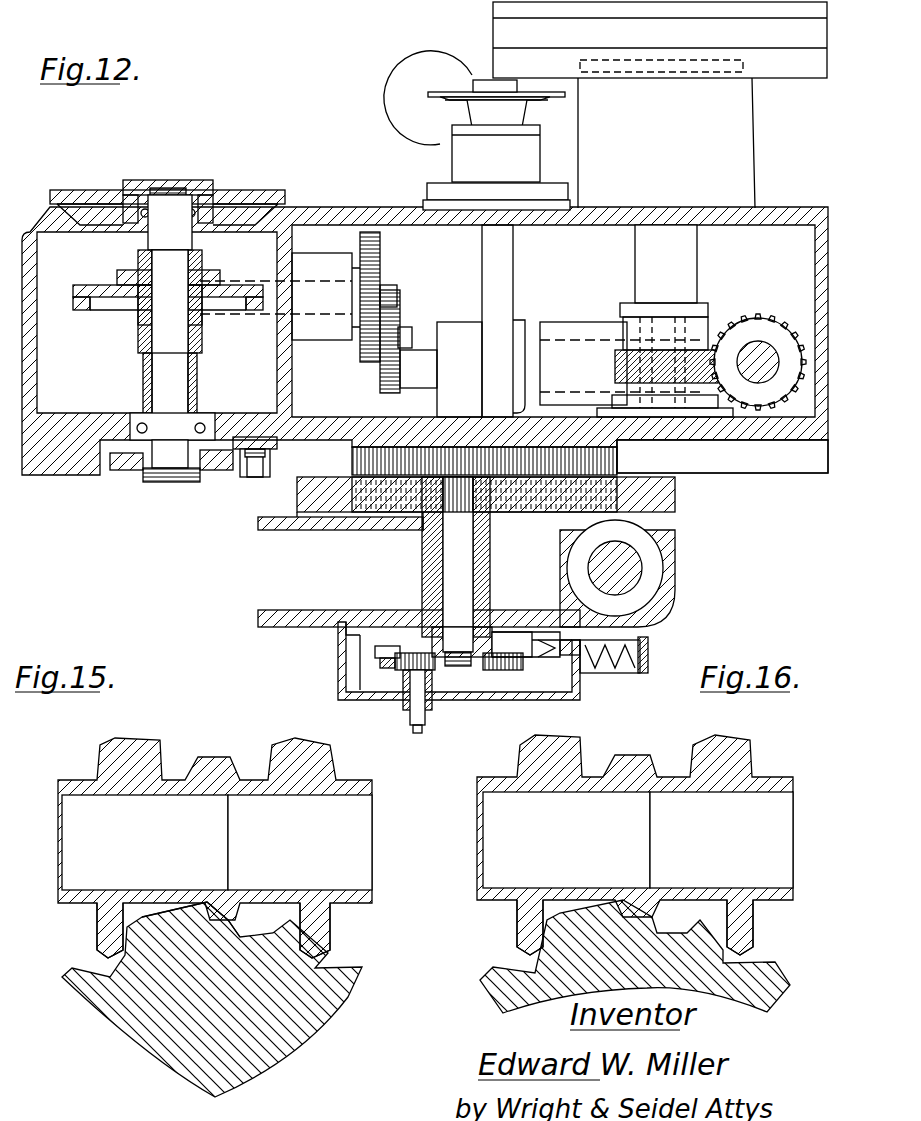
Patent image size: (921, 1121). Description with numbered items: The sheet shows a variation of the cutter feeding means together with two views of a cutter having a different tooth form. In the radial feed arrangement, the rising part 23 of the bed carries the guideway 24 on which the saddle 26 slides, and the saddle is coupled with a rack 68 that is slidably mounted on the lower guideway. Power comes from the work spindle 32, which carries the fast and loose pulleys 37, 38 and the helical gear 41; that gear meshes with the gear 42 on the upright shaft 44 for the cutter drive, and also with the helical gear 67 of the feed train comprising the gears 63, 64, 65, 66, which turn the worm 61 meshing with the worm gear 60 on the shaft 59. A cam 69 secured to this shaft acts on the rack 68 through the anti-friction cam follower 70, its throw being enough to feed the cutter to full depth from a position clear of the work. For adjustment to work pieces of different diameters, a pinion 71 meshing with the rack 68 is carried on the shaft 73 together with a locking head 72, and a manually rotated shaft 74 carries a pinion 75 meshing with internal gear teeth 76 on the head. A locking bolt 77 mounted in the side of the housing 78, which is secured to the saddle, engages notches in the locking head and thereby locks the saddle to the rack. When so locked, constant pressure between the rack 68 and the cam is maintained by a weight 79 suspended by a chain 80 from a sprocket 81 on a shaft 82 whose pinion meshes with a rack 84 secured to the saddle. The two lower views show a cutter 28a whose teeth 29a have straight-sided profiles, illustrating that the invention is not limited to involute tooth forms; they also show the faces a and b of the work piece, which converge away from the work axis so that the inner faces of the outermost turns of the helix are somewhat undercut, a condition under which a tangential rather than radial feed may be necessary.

In FIG. 12, the rising part of the bed 23 is at (780, 427).
In FIG. 12, the guideway 24 is at (732, 457).
In FIG. 12, the saddle 26 is at (665, 540).
In FIG. 12, the work spindle 32 is at (657, 275).
In FIG. 12, the fast pulley 37 is at (782, 60).
In FIG. 12, the loose pulley 38 is at (500, 12).
In FIG. 12, the helical gear 41 is at (700, 338).
In FIG. 12, the gear 42 is at (750, 318).
In FIG. 12, the upright shaft 44 is at (762, 358).
In FIG. 12, the shaft 59 is at (165, 385).
In FIG. 12, the worm gear 60 is at (86, 298).
In FIG. 12, the worm 61 is at (160, 322).
In FIG. 12, the gear of gear train 63 is at (372, 262).
In FIG. 12, the gear of gear train 64 is at (368, 358).
In FIG. 12, the gear of gear train 65 is at (392, 325).
In FIG. 12, the gear of gear train 66 is at (390, 392).
In FIG. 12, the helical gear 67 is at (690, 330).
In FIG. 12, the rack 68 is at (607, 455).
In FIG. 12, the cam 69 is at (128, 465).
In FIG. 12, the cam follower 70 is at (235, 470).
In FIG. 12, the pinion 71 is at (453, 447).
In FIG. 12, the locking head 72 is at (533, 647).
In FIG. 12, the shaft 73 is at (460, 553).
In FIG. 12, the shaft 74 is at (415, 705).
In FIG. 12, the pinion 75 is at (400, 672).
In FIG. 12, the internal gear teeth 76 is at (500, 668).
In FIG. 12, the locking bolt 77 is at (548, 668).
In FIG. 12, the housing 78 is at (470, 700).
In FIG. 12, the weight 79 is at (400, 110).
In FIG. 12, the chain 80 is at (427, 93).
In FIG. 12, the sprocket 81 is at (505, 100).
In FIG. 12, the shaft 82 is at (497, 248).
In FIG. 12, the rack 84 is at (365, 530).
In FIG. 15, the cutter 28a is at (265, 1018).
In FIG. 15, the cutter teeth 29a is at (340, 978).
In FIG. 16, the cutter teeth 29a is at (758, 978).
In FIG. 15, the work piece face a is at (100, 942).
In FIG. 16, the work piece face a is at (525, 940).
In FIG. 15, the work piece face b is at (320, 940).
In FIG. 16, the work piece face b is at (740, 940).